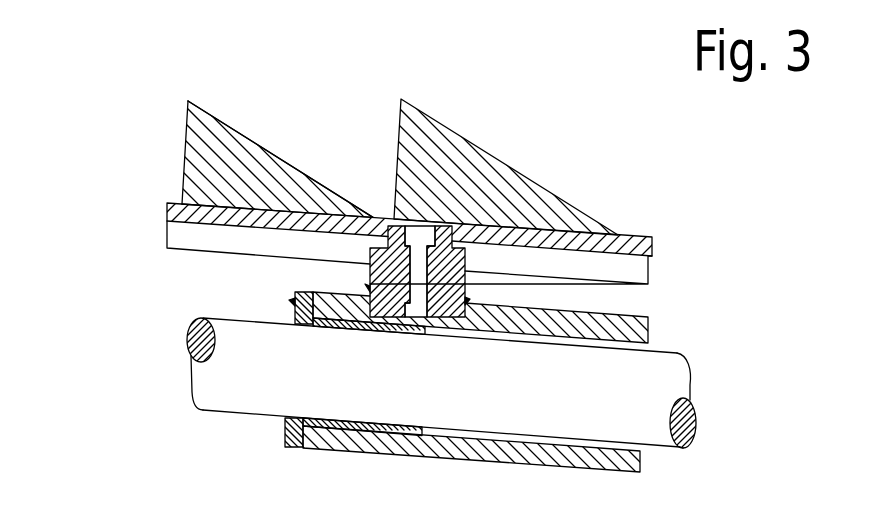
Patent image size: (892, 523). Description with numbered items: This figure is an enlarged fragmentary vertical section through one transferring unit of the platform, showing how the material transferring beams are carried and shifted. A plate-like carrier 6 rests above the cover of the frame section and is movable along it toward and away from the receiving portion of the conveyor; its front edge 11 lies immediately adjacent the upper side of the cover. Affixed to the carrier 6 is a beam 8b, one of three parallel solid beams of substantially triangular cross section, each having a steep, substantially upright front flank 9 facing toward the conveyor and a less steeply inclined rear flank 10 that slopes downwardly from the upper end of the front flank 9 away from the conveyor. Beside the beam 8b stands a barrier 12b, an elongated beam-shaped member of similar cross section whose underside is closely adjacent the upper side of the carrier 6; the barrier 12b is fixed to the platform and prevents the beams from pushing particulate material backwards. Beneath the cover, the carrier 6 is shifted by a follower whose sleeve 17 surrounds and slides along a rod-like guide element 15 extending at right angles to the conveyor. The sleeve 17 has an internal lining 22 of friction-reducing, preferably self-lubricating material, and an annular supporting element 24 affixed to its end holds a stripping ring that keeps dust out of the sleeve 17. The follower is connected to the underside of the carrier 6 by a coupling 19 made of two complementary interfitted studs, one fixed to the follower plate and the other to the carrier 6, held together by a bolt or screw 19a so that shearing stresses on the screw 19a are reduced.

The carrier 6 is at (640, 240).
The beam 8b is at (218, 168).
The front flank 9 is at (185, 145).
The rear flank 10 is at (290, 160).
The front edge 11 is at (167, 210).
The barrier 12b is at (528, 197).
The guide element 15 is at (240, 378).
The sleeve 17 is at (423, 448).
The second coupling 19 is at (468, 300).
The bolt or screw 19a is at (422, 235).
The internal lining 22 is at (342, 448).
The annular supporting element 24 is at (295, 300).